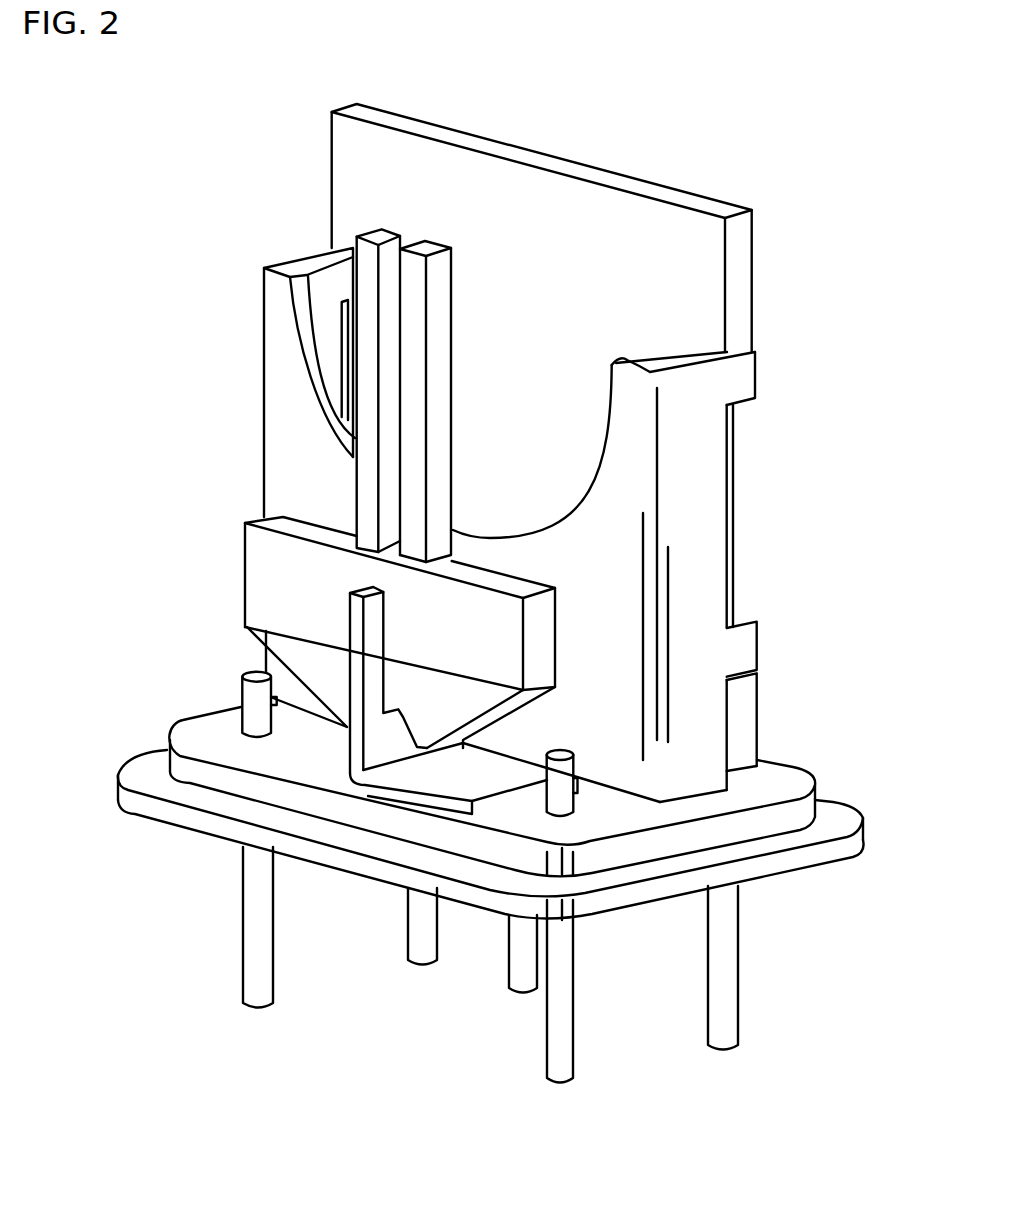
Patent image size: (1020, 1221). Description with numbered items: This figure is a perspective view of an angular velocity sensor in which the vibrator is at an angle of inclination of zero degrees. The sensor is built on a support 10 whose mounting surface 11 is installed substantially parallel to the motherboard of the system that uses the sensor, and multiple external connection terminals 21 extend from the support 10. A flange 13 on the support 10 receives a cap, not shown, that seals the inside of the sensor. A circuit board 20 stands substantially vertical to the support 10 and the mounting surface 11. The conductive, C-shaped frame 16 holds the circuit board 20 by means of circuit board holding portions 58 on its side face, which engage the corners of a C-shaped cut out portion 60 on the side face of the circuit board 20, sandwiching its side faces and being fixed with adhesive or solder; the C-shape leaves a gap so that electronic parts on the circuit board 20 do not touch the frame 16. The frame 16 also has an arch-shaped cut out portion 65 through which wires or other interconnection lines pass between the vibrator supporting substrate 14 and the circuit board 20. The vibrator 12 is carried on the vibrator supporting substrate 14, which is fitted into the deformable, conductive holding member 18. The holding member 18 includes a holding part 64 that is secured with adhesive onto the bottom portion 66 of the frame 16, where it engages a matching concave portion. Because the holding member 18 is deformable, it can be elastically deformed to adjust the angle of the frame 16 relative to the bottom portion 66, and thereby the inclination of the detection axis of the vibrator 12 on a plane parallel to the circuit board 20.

The support 10 is at (187, 733).
The mounting surface 11 is at (373, 878).
The vibrator 12 is at (373, 233).
The flange 13 is at (843, 817).
The vibrator supporting substrate 14 is at (273, 558).
The frame 16 is at (710, 478).
The holding member 18 is at (372, 633).
The circuit board 20 is at (742, 263).
The external connection terminals 21 is at (730, 966).
The circuit board holding portions 58 is at (742, 380).
The cut out portion 60 is at (727, 552).
The holding part 64 is at (447, 785).
The cut out portion 65 is at (320, 382).
The bottom portion 66 is at (707, 795).